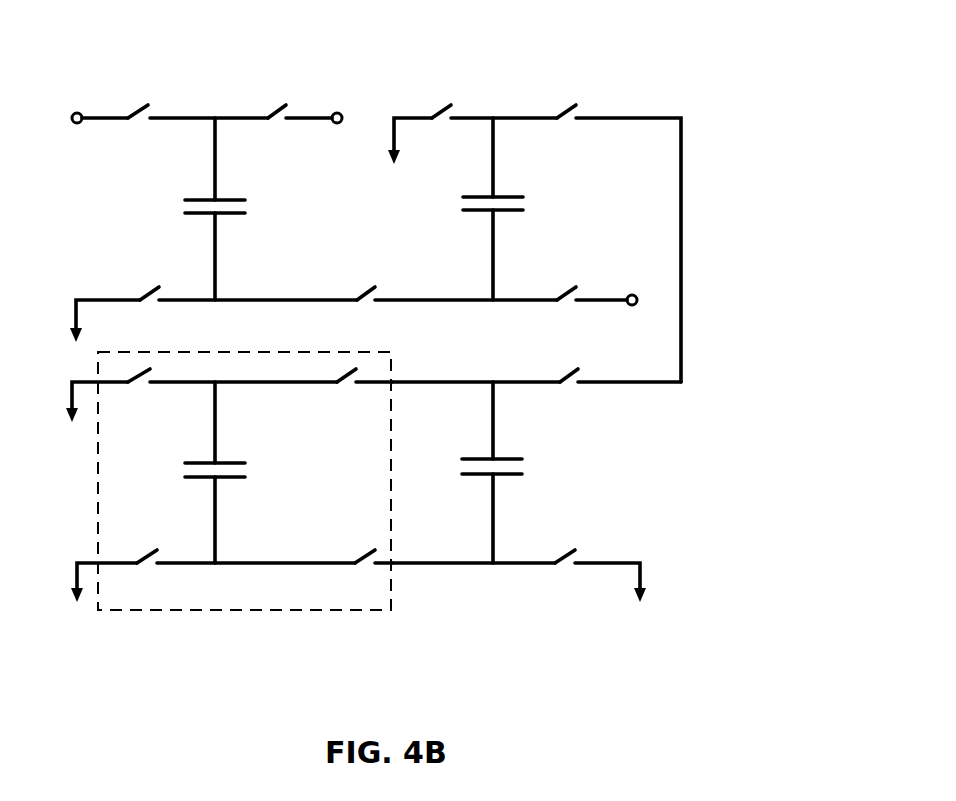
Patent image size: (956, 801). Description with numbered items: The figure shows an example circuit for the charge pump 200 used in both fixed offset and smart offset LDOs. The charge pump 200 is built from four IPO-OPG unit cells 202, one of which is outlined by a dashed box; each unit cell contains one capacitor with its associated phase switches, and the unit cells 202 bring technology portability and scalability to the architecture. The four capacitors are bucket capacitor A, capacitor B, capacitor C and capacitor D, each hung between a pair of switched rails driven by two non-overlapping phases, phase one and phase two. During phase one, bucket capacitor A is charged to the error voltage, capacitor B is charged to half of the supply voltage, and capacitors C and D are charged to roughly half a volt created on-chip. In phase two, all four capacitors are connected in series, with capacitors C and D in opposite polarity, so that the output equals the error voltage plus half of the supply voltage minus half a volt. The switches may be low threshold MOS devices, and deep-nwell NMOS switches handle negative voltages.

The charge pump 200 is at (738, 60).
The IPO-OPG unit cell 202 is at (98, 610).
The bucket capacitor A is at (220, 209).
The capacitor B is at (495, 209).
The capacitor C is at (217, 472).
The capacitor D is at (496, 472).